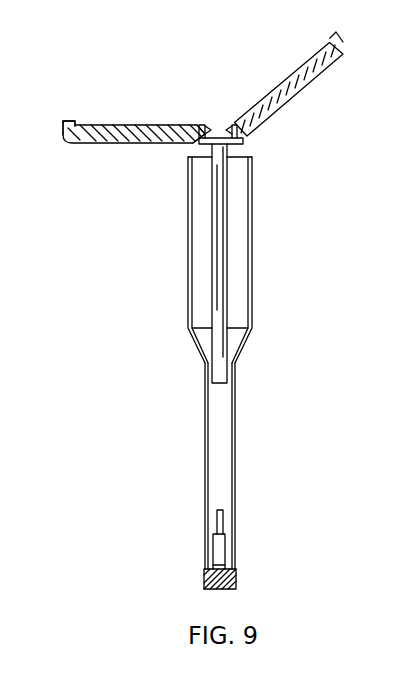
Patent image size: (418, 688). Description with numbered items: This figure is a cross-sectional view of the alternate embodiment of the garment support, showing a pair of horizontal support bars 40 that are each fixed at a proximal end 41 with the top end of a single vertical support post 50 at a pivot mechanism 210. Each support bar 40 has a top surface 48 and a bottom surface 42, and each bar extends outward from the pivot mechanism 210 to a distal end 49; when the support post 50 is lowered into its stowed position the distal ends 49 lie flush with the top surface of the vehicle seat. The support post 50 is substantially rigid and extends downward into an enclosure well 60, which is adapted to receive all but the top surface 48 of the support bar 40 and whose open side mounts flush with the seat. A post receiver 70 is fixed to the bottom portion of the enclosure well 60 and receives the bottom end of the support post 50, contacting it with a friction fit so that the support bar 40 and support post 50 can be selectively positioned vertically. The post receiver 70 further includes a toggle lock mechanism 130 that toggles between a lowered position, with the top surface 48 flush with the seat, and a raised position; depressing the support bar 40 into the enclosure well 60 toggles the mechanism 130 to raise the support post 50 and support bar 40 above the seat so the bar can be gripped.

The support bar 40 is at (131, 99).
The top surface 48 is at (145, 127).
The bottom surface 42 is at (147, 143).
The distal end 49 is at (63, 123).
The proximal end 41 is at (200, 131).
The pivot mechanism 210 is at (238, 136).
The enclosure well 60 is at (252, 205).
The support post 50 is at (222, 262).
The post receiver 70 is at (205, 472).
The toggle lock mechanism 130 is at (222, 548).